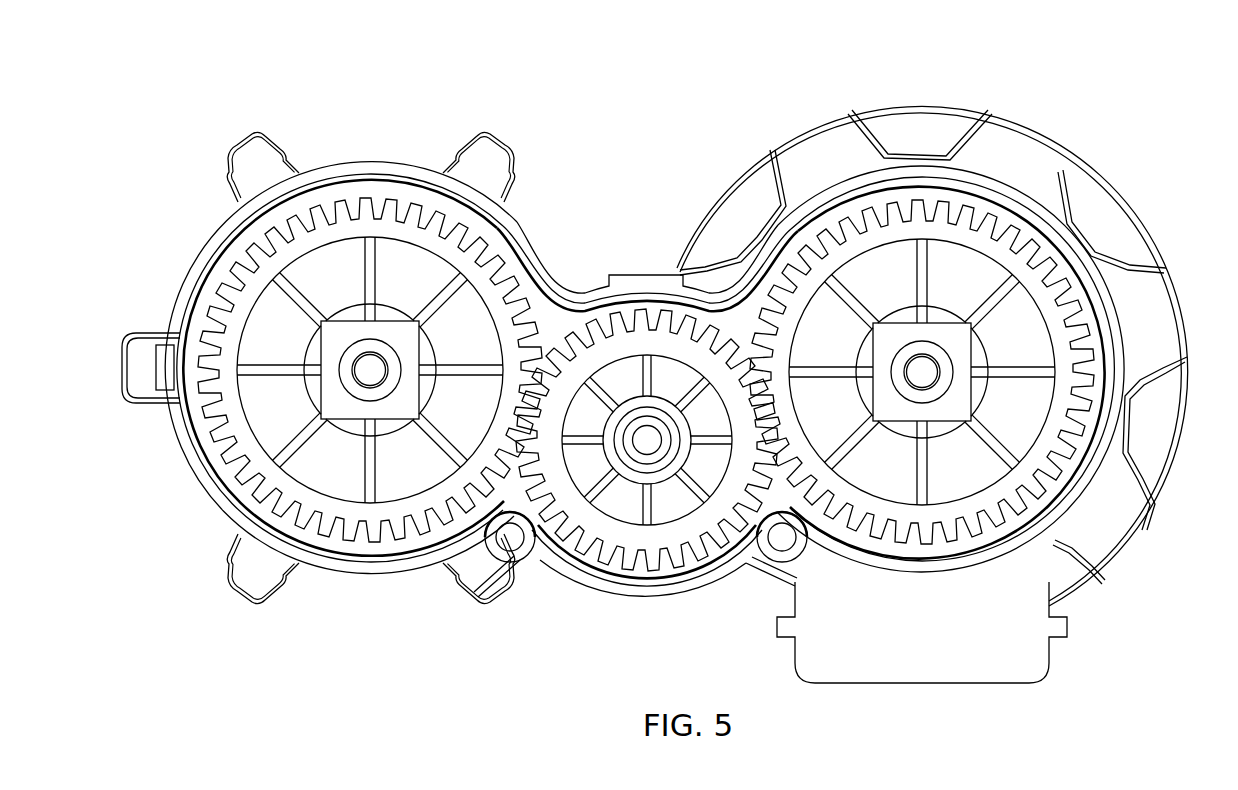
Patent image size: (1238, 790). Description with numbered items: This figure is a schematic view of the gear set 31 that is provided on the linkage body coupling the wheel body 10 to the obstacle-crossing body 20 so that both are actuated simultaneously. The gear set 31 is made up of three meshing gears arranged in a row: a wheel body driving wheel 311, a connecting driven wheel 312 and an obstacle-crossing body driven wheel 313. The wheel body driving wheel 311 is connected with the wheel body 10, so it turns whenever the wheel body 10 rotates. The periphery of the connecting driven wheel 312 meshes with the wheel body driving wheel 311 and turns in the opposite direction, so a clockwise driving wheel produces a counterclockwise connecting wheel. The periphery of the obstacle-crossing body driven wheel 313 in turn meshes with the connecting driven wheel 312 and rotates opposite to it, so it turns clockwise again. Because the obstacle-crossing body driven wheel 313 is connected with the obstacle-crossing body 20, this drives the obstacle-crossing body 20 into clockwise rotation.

The wheel body 10 is at (1027, 157).
The obstacle-crossing body 20 is at (255, 160).
The gear set 31 is at (715, 63).
The wheel body driving wheel 311 is at (836, 230).
The connecting driven wheel 312 is at (652, 330).
The obstacle-crossing body driven wheel 313 is at (446, 230).